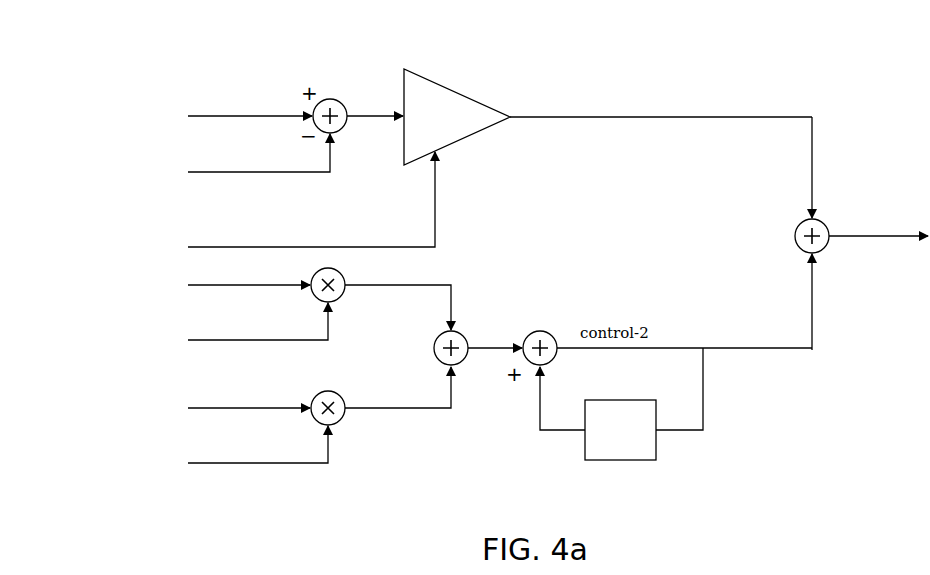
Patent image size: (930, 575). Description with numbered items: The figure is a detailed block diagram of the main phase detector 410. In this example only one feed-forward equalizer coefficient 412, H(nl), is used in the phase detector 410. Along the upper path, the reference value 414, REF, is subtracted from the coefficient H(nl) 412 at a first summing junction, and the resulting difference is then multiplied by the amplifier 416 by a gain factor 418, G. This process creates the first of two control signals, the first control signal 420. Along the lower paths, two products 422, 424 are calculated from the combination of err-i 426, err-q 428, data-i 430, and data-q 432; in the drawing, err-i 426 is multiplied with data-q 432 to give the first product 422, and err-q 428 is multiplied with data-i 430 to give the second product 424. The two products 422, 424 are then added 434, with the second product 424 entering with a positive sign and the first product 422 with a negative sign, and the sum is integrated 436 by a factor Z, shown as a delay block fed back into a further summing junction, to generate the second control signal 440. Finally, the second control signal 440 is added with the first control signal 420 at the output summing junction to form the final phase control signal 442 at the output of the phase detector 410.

The main phase detector 410 is at (743, 83).
The feed-forward equalizer coefficient 412 is at (215, 82).
The reference value 414 is at (180, 153).
The amplifier 416 is at (457, 87).
The gain factor 418 is at (182, 229).
The control-1 420 is at (634, 87).
The product 422 is at (423, 282).
The product 424 is at (407, 414).
The err-i 426 is at (182, 270).
The err-q 428 is at (182, 392).
The data-i 430 is at (182, 321).
The data-q 432 is at (182, 441).
The adder 434 is at (472, 335).
The integrator 436 is at (662, 452).
The control-2 440 is at (817, 312).
The phase control signal 442 is at (870, 203).